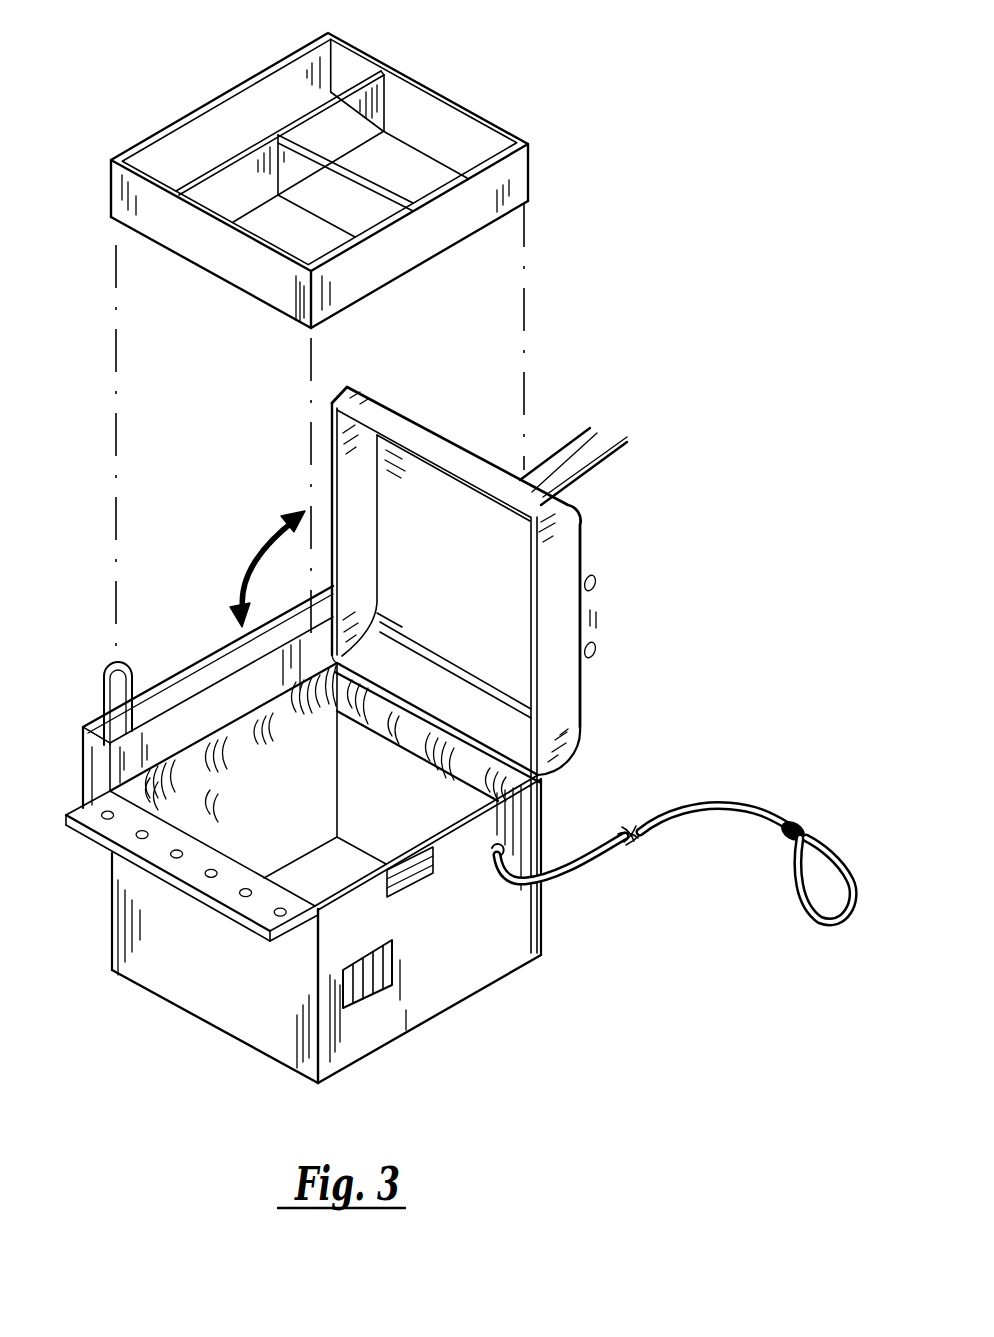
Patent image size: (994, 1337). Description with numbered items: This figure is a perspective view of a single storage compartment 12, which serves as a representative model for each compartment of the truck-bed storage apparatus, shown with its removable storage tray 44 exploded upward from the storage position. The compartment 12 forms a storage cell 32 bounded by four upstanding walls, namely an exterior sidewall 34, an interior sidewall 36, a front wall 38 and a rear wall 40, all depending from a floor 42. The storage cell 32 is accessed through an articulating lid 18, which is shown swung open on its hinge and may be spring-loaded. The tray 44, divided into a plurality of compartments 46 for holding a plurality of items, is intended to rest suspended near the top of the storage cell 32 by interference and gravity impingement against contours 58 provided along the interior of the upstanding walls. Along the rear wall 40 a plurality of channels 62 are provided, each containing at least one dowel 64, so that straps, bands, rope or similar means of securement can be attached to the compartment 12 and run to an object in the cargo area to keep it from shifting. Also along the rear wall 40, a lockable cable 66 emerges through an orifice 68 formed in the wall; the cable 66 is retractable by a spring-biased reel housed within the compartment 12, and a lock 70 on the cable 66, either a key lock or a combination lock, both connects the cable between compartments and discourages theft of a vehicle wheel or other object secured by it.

The storage compartment 12 is at (447, 819).
The articulating lid 18 is at (565, 700).
The storage cell 32 is at (400, 785).
The exterior sidewall 34 is at (142, 920).
The interior sidewall 36 is at (447, 810).
The front wall 38 is at (227, 803).
The rear wall 40 is at (467, 940).
The floor 42 is at (273, 918).
The removable storage tray 44 is at (361, 180).
The compartments 46 is at (230, 205).
The contours 58 is at (140, 783).
The channels 62 is at (392, 1025).
The dowel 64 is at (370, 987).
The lockable cable 66 is at (675, 874).
The orifice 68 is at (492, 857).
The lock 70 is at (793, 825).